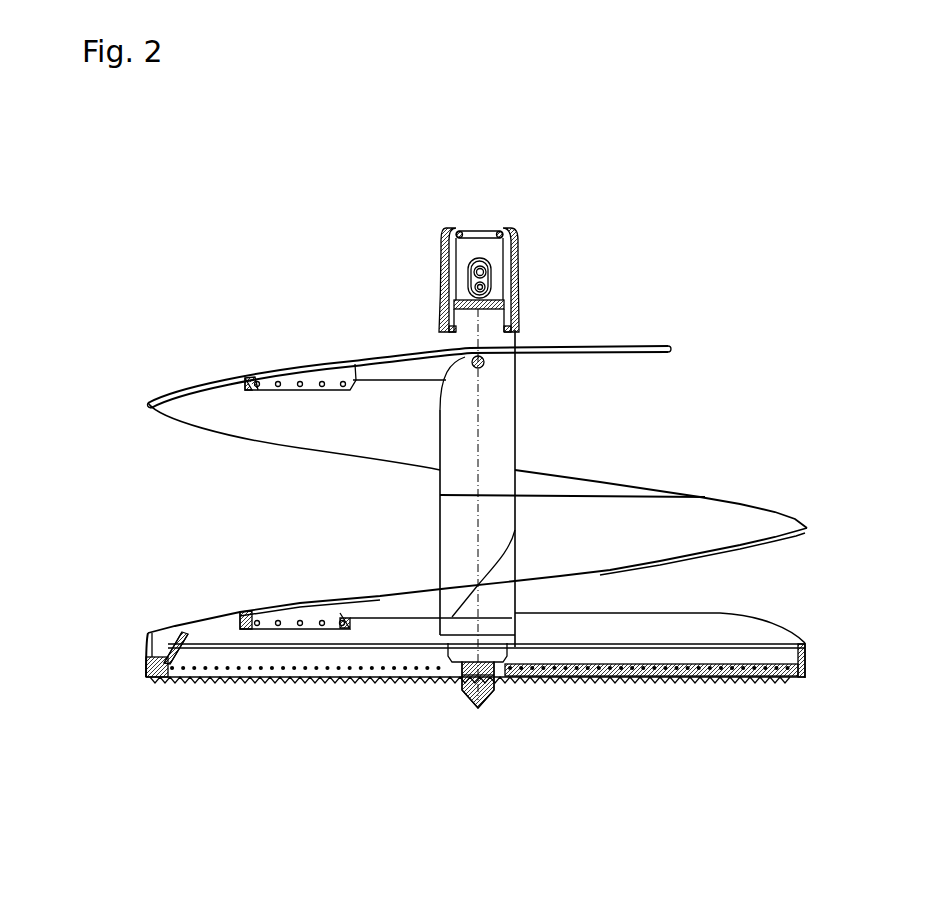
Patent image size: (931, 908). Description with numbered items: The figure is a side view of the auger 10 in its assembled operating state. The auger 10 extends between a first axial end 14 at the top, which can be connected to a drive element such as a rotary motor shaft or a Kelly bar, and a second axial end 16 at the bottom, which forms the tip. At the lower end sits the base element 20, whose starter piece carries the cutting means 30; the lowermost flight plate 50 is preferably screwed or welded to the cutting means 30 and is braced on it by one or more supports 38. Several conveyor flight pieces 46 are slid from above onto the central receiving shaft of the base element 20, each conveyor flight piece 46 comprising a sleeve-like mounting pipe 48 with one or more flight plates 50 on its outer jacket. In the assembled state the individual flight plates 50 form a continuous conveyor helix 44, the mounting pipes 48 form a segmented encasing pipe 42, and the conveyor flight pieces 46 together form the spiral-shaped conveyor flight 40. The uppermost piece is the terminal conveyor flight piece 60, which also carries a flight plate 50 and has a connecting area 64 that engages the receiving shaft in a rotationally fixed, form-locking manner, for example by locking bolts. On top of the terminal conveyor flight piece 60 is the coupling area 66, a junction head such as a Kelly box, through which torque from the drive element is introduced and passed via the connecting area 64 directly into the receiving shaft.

The auger 10 is at (220, 225).
The first axial end 14 is at (447, 212).
The second axial end 16 is at (472, 716).
The base element 20 is at (375, 735).
The cutting means 30 is at (667, 662).
The support 38 is at (298, 672).
The conveyor flight 40 is at (705, 383).
The encasing pipe 42 is at (455, 560).
The conveyor helix 44 is at (732, 512).
The conveyor flight piece 46 is at (272, 348).
The mounting pipe 48 is at (505, 405).
The flight plate 50 is at (400, 352).
The terminal conveyor flight piece 60 is at (315, 322).
The connecting area 64 is at (514, 333).
The coupling area 66 is at (514, 272).